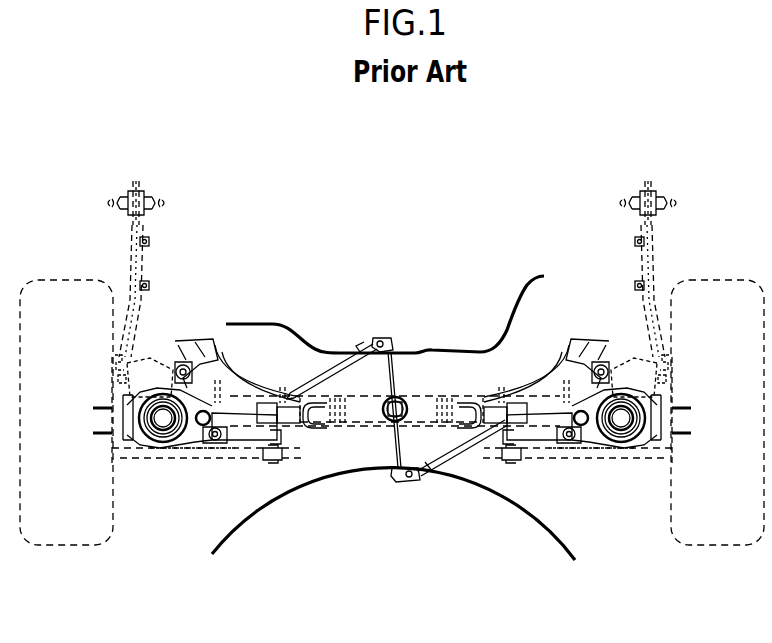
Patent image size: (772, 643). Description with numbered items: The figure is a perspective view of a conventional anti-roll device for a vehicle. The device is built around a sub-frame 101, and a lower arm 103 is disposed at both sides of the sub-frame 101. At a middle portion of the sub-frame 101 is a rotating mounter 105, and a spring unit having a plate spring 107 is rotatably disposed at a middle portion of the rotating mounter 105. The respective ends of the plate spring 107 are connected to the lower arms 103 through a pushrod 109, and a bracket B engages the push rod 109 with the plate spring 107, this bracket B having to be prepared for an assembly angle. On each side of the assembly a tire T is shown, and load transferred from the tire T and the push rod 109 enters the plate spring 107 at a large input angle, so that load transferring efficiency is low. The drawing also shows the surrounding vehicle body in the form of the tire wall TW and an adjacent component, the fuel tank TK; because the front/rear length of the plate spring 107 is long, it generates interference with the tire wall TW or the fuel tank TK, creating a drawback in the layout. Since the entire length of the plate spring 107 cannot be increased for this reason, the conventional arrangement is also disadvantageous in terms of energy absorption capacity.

The sub-frame 101 is at (350, 440).
The lower arm 103 is at (168, 444).
The rotating mounter 105 is at (400, 397).
The plate spring 107 is at (405, 480).
The pushrod 109 is at (337, 368).
The bracket B is at (382, 338).
The tire T is at (68, 533).
The fuel tank TK is at (530, 296).
The tire wall TW is at (243, 523).